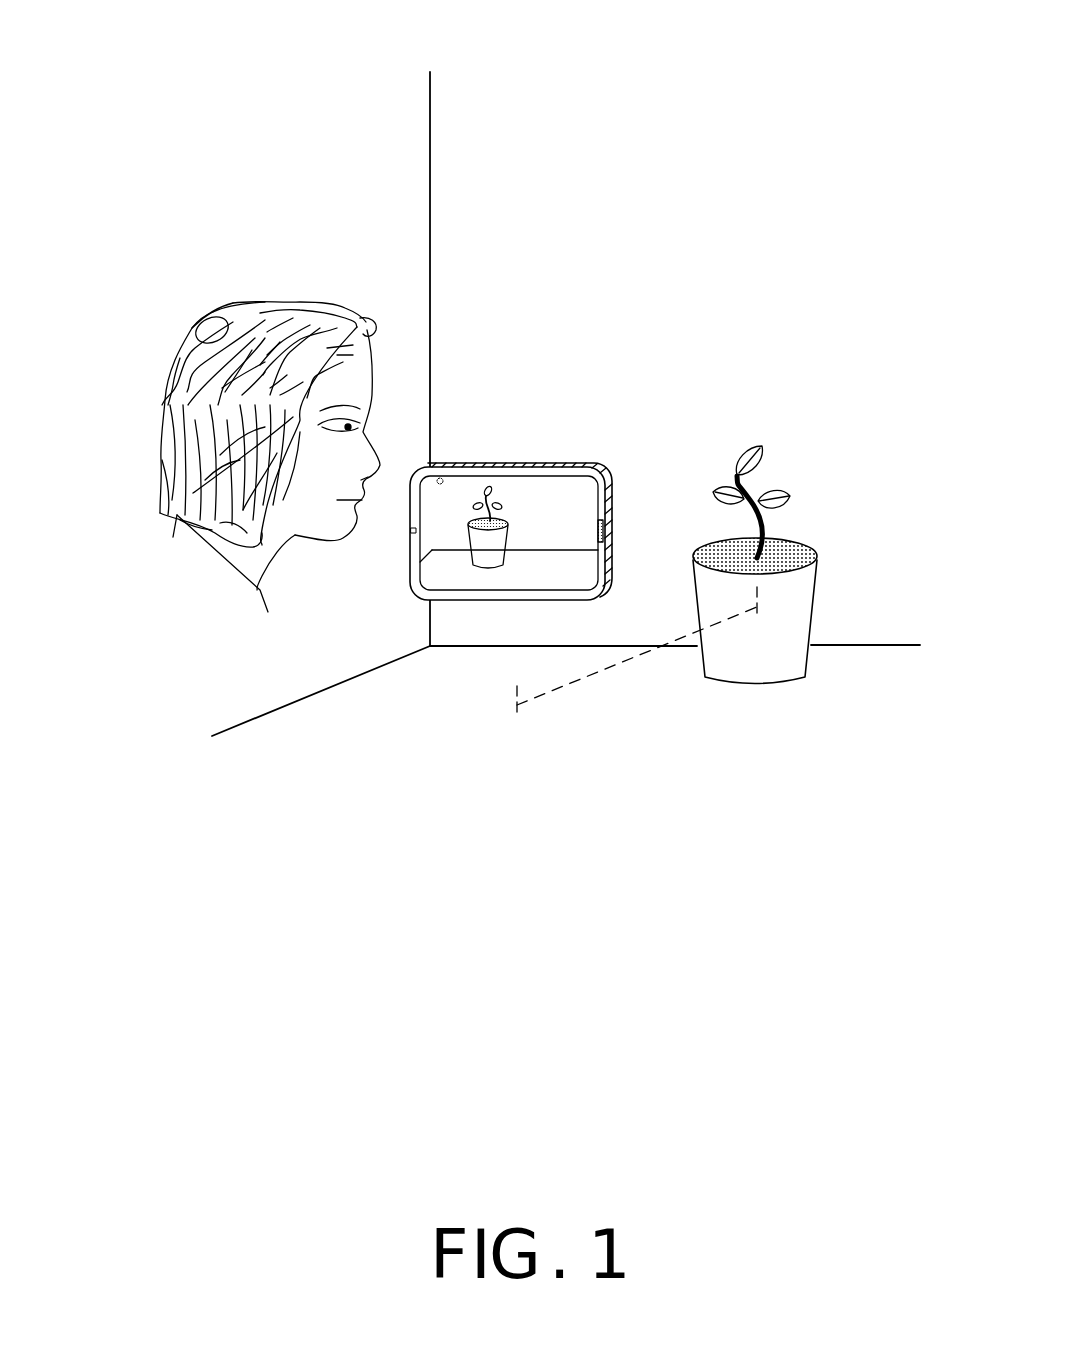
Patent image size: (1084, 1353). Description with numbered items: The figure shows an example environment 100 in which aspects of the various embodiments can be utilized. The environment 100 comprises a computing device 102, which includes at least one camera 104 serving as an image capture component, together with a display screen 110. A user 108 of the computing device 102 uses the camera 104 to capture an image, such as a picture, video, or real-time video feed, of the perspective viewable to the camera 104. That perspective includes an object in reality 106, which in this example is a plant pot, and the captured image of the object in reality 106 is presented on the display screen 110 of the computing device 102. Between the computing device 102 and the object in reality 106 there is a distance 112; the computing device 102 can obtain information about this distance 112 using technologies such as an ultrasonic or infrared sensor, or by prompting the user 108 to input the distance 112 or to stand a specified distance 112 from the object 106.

The example environment 100 is at (113, 96).
The computing device 102 is at (537, 499).
The camera 104 is at (445, 461).
The object in reality 106 is at (820, 606).
The user 108 is at (316, 270).
The display screen 110 is at (600, 495).
The distance 112 is at (598, 672).